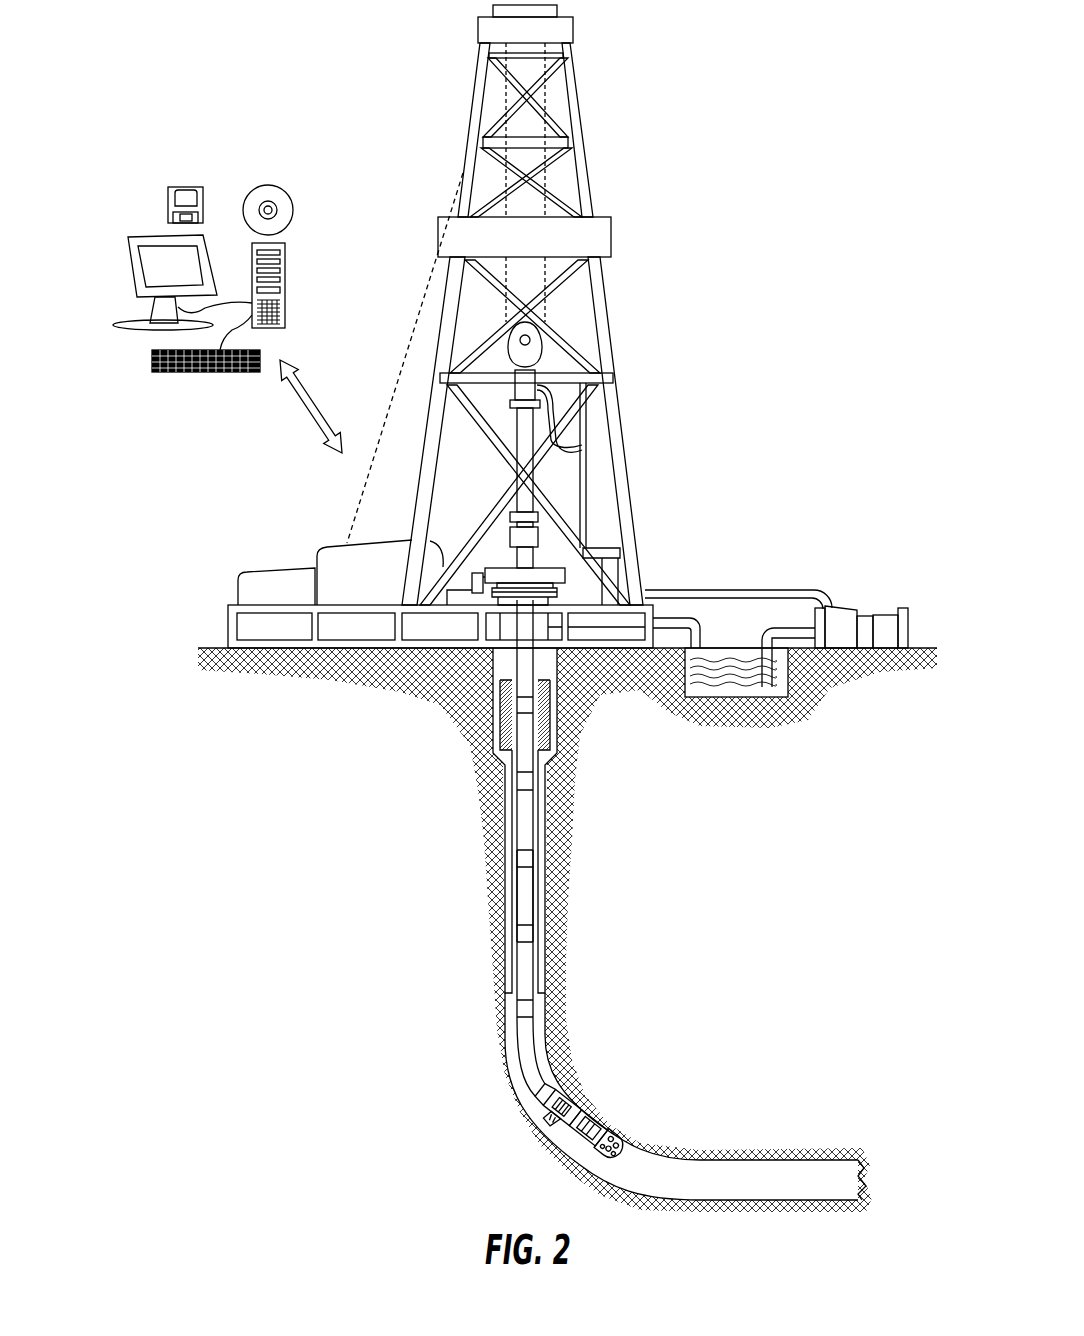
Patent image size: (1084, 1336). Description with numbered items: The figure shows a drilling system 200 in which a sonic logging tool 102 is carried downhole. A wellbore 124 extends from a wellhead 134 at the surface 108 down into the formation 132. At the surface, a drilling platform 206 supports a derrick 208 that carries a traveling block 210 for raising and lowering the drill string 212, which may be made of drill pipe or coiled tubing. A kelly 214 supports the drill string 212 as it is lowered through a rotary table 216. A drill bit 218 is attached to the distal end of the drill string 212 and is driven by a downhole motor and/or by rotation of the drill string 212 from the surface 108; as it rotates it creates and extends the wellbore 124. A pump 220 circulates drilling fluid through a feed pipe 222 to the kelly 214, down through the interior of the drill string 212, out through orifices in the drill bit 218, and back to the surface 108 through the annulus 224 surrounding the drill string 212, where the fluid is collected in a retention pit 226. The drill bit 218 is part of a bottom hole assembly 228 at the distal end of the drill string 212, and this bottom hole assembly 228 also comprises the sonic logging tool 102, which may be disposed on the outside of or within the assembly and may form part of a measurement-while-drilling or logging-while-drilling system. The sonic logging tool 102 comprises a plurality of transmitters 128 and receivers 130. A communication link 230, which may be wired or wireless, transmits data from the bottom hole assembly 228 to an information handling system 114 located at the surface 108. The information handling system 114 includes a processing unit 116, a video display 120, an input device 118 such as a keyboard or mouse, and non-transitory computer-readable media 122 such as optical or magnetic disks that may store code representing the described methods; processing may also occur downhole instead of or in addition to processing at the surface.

The drilling system 200 is at (840, 114).
The information handling system 114 is at (201, 283).
The non-transitory computer-readable media 122 is at (260, 185).
The video display 120 is at (136, 277).
The processing unit 116 is at (286, 257).
The input device 118 is at (163, 373).
The communication link 230 is at (300, 413).
The derrick 208 is at (588, 158).
The traveling block 210 is at (547, 348).
The kelly 214 is at (527, 432).
The rotary table 216 is at (560, 568).
The wellhead 134 is at (570, 594).
The feed pipe 222 is at (762, 590).
The pump 220 is at (838, 606).
The surface 108 is at (922, 648).
The drilling platform 206 is at (228, 627).
The retention pit 226 is at (732, 685).
The drill string 212 is at (535, 837).
The annulus 224 is at (506, 855).
The wellbore 124 is at (543, 855).
The formation 132 is at (772, 944).
The transmitters 128 is at (558, 1103).
The sonic logging tool 102 is at (588, 1128).
The drill bit 218 is at (611, 1146).
The bottom hole assembly 228 is at (531, 1111).
The receivers 130 is at (551, 1119).